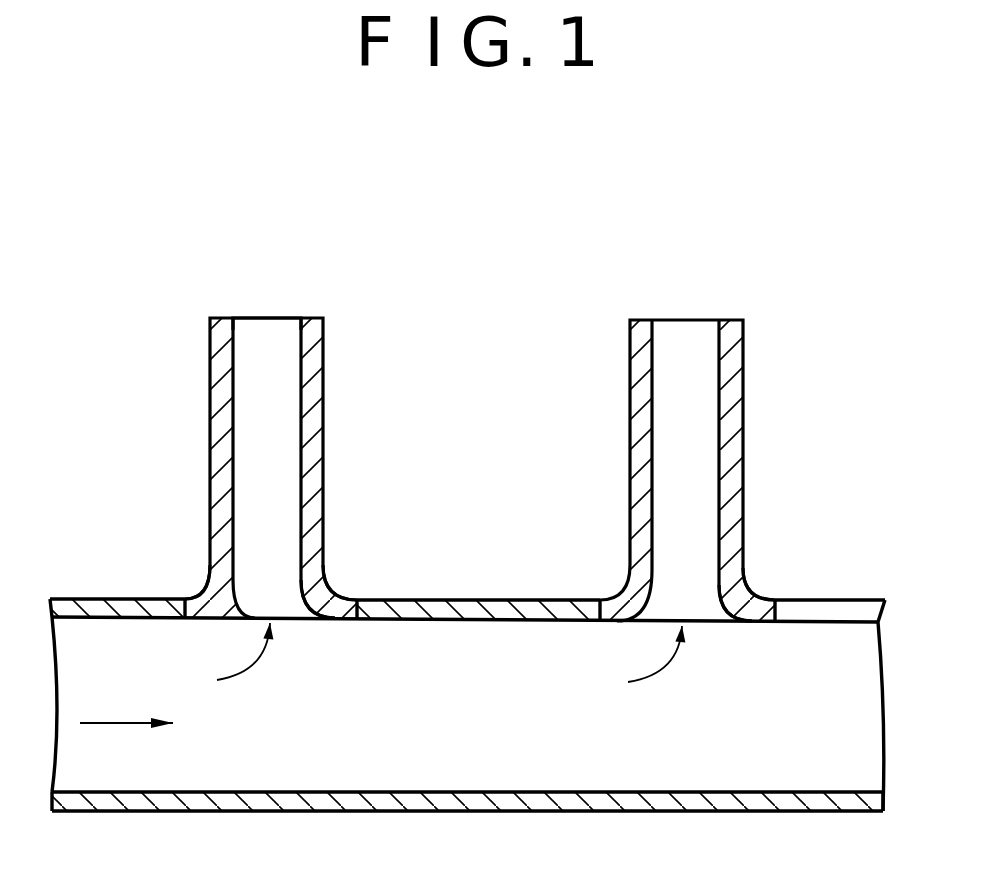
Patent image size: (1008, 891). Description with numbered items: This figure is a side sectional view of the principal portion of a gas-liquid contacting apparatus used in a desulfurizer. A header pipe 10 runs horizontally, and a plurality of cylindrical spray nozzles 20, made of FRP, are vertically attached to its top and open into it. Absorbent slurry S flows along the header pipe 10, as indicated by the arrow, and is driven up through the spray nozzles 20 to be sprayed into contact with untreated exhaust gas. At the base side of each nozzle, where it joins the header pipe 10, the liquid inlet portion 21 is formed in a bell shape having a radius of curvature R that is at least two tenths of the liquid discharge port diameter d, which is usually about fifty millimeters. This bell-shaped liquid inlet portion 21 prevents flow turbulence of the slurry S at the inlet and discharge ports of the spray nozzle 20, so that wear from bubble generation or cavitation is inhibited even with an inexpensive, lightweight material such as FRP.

The header pipe 10 is at (102, 607).
The spray nozzle 20 is at (318, 502).
The liquid inlet portion 21 is at (327, 587).
The radius of curvature R is at (222, 592).
The liquid discharge port diameter d is at (302, 316).
The absorbent slurry S is at (103, 722).